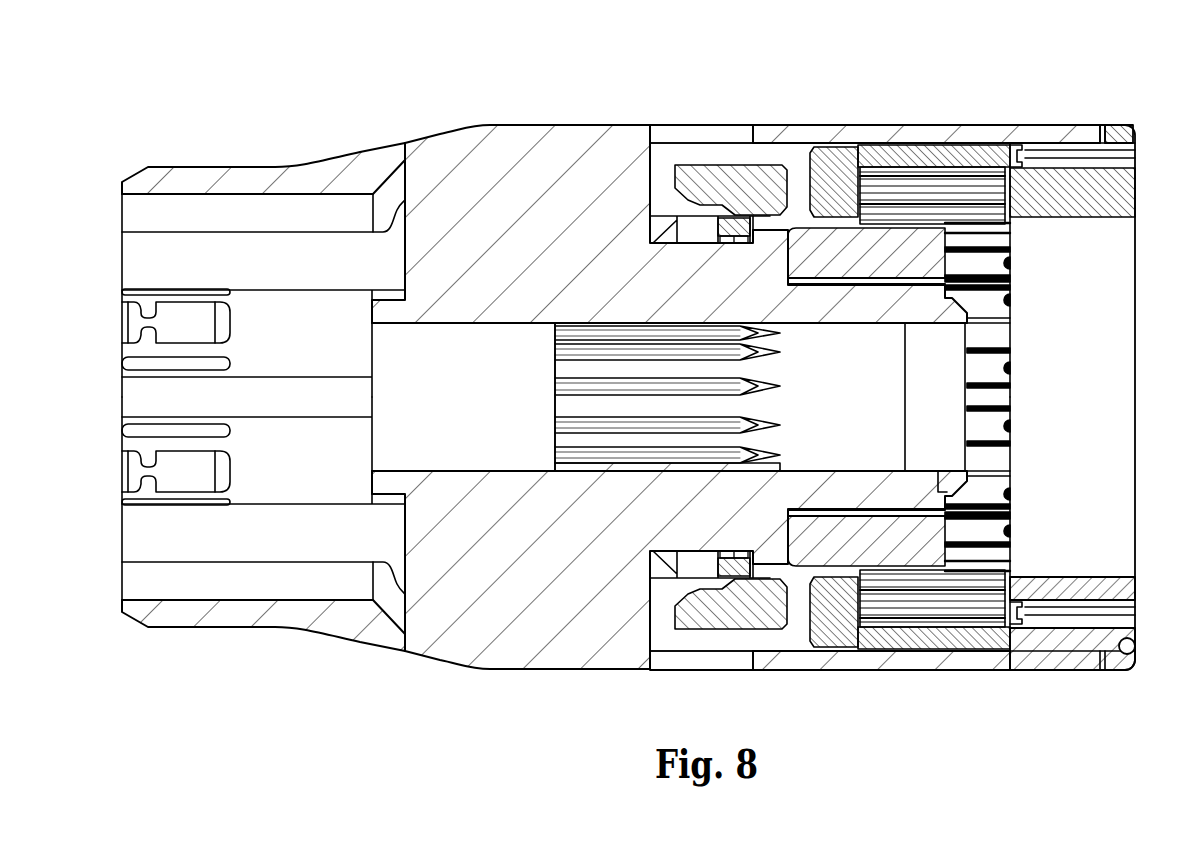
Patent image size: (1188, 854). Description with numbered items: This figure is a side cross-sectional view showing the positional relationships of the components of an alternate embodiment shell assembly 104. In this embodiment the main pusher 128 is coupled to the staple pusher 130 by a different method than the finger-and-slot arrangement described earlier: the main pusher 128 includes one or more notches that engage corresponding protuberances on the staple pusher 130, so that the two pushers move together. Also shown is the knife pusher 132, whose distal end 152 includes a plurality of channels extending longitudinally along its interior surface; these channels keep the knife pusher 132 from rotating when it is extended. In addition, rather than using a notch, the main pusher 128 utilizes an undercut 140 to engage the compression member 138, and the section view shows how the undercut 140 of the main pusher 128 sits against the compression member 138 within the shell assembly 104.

The shell assembly 104 is at (1120, 93).
The main pusher 128 is at (741, 180).
The staple pusher 130 is at (968, 155).
The knife pusher 132 is at (764, 215).
The compression member 138 is at (826, 237).
The undercut 140 is at (724, 168).
The distal end 152 is at (886, 225).